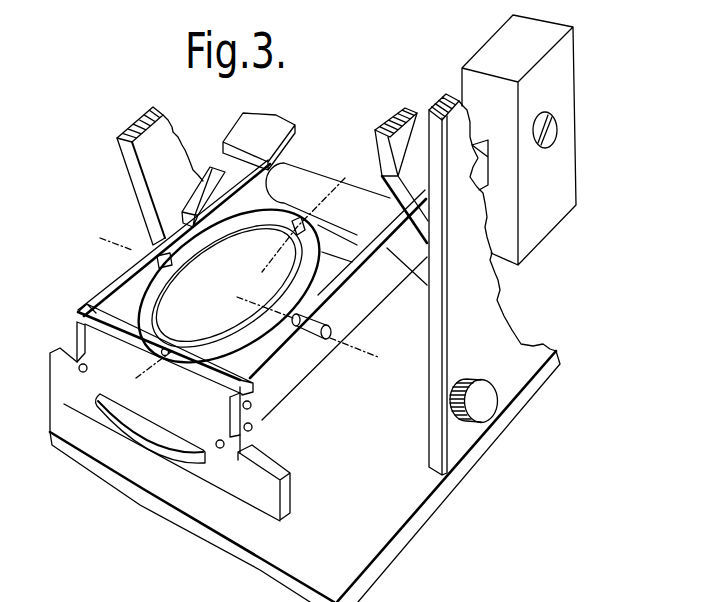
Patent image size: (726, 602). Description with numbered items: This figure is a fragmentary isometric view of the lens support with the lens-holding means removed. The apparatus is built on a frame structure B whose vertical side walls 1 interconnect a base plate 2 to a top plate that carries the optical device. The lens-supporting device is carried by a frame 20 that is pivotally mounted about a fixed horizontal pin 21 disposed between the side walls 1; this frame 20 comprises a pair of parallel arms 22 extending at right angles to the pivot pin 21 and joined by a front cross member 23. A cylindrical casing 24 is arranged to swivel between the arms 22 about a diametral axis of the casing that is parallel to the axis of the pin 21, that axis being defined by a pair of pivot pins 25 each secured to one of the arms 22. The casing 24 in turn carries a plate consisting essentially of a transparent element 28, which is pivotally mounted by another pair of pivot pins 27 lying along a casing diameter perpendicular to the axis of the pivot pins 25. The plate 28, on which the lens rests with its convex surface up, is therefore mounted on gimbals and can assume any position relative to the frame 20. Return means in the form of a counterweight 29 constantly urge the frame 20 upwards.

The vertical side wall 1 is at (485, 296).
The base plate 2 is at (402, 514).
The frame 20 is at (281, 407).
The pivot pin 21 is at (318, 183).
The parallel arms 22 is at (122, 307).
The front cross member 23 is at (100, 381).
The cylindrical casing 24 is at (150, 310).
The pivot pins 25 is at (160, 257).
The pivot pins 27 is at (344, 180).
The transparent element 28 is at (210, 263).
The counterweight 29 is at (553, 165).
The frame structure B is at (506, 445).